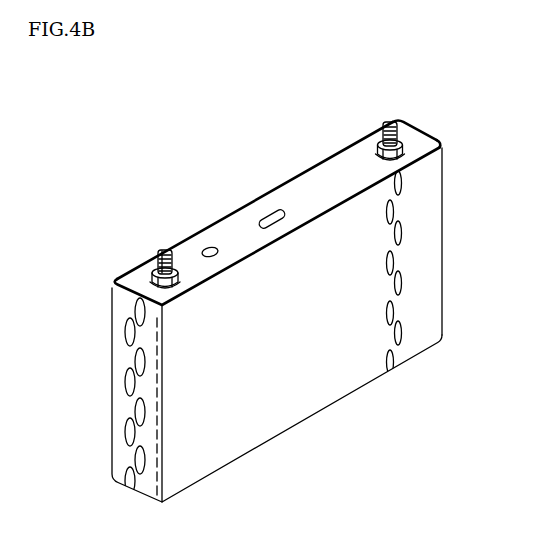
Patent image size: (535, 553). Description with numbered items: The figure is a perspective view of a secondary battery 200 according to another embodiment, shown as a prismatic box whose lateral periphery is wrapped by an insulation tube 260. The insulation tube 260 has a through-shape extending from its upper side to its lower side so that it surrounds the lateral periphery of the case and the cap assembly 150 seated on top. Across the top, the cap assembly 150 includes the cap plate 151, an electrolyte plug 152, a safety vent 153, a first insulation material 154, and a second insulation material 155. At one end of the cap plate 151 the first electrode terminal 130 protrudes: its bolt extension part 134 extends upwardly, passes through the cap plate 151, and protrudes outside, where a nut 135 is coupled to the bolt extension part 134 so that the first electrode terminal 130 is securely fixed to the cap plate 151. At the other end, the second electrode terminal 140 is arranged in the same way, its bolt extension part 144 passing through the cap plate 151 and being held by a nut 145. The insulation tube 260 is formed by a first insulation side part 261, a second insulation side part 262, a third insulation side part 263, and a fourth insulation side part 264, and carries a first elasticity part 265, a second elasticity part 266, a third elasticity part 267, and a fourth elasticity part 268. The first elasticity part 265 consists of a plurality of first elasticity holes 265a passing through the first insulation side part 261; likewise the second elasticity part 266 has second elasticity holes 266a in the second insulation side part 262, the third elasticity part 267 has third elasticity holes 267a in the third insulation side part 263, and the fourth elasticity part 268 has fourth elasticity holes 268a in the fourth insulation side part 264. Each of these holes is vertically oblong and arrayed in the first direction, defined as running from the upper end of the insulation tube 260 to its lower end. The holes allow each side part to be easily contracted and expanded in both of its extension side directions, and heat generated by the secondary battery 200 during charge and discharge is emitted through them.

The secondary battery 200 is at (109, 133).
The first electrode terminal 130 is at (170, 247).
The bolt extension part 134 is at (165, 248).
The nut 135 is at (157, 270).
The first insulation material 154 is at (150, 275).
The second electrode terminal 140 is at (380, 121).
The bolt extension part 144 is at (388, 124).
The nut 145 is at (395, 132).
The second insulation material 155 is at (378, 147).
The cap assembly 150 is at (310, 173).
The cap plate 151 is at (343, 165).
The electrolyte plug 152 is at (215, 247).
The safety vent 153 is at (270, 216).
The insulation tube 260 is at (99, 392).
The first insulation side part 261 is at (122, 430).
The second insulation side part 262 is at (440, 136).
The third insulation side part 263 is at (243, 447).
The fourth insulation side part 264 is at (280, 183).
The first elasticity part 265 is at (125, 325).
The first elasticity holes 265a is at (128, 334).
The second elasticity part 266 is at (433, 126).
The second elasticity holes 266a is at (437, 132).
The third elasticity part 267 is at (402, 364).
The third elasticity holes 267a is at (390, 369).
The fourth elasticity part 268 is at (157, 262).
The fourth elasticity holes 268a is at (153, 249).